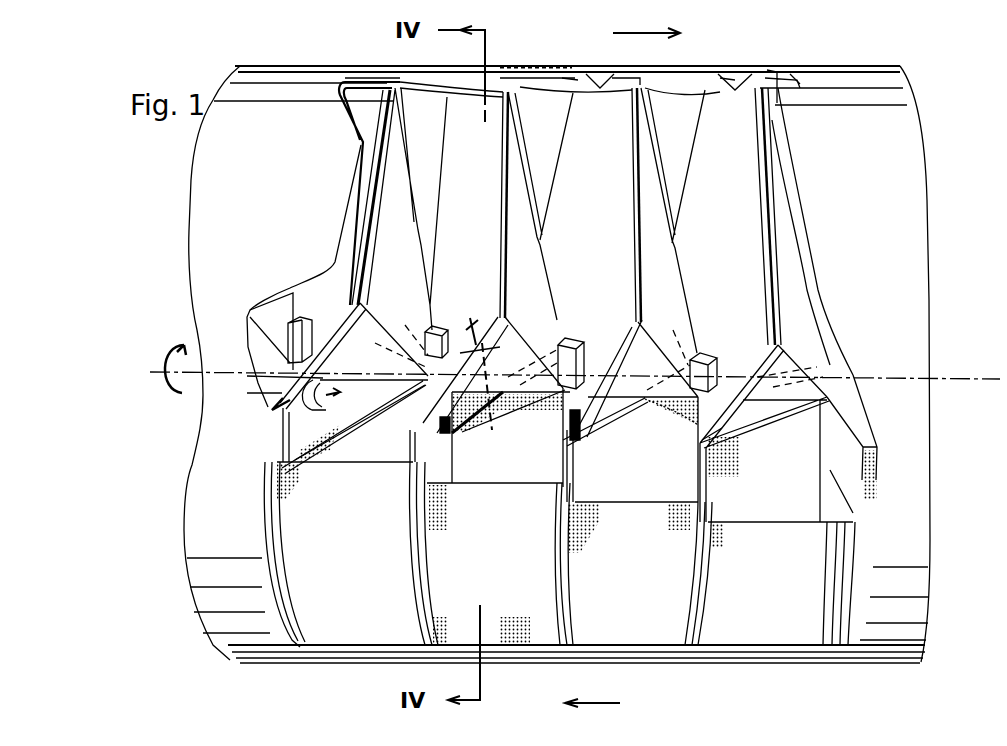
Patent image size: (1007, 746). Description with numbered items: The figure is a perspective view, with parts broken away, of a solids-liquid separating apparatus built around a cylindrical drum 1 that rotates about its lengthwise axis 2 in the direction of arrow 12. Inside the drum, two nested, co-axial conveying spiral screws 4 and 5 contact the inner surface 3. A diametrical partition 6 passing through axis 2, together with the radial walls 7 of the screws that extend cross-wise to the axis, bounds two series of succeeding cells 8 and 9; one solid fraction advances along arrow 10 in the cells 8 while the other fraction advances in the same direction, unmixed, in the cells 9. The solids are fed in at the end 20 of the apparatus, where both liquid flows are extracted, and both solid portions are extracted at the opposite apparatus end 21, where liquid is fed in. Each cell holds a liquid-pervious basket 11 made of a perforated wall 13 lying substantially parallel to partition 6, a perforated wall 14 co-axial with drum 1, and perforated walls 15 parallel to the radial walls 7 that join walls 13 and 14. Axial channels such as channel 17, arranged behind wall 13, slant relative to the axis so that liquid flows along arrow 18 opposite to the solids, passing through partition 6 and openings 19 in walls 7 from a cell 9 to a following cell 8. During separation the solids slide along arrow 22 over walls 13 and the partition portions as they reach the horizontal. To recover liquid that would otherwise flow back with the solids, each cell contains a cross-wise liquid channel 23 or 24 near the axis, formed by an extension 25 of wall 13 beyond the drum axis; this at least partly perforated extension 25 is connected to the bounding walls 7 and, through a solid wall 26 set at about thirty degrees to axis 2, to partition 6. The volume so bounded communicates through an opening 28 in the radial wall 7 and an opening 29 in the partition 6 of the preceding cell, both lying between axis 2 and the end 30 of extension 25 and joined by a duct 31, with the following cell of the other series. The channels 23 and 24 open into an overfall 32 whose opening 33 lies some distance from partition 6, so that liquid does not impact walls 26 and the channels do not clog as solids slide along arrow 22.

The cylindrical drum 1 is at (905, 645).
The lengthwise axis 2 is at (955, 375).
The inner surface 3 is at (748, 650).
The conveying spiral screw 4 is at (770, 252).
The conveying spiral screw 5 is at (710, 82).
The partition 6 is at (398, 362).
The radial walls 7 is at (592, 470).
The cells 8 is at (562, 401).
The cells 9 is at (790, 75).
The arrow 10 is at (605, 698).
The basket 11 is at (512, 640).
The arrow 12 is at (165, 380).
The perforated wall 13 is at (540, 66).
The perforated wall 14 is at (553, 640).
The perforated walls 15 is at (300, 425).
The axial channel 17 is at (745, 78).
The arrow 18 is at (640, 40).
The openings 19 is at (545, 235).
The right side 20 is at (964, 272).
The apparatus end 21 is at (209, 376).
The arrow 22 is at (475, 322).
The liquid channel 23 is at (570, 330).
The liquid channel 24 is at (640, 410).
The extension 25 is at (700, 350).
The solid wall 26 is at (640, 430).
The opening 28 is at (438, 335).
The opening 29 is at (490, 344).
The end 30 is at (698, 355).
The duct 31 is at (720, 360).
The overfall 32 is at (250, 387).
The opening 33 is at (330, 393).